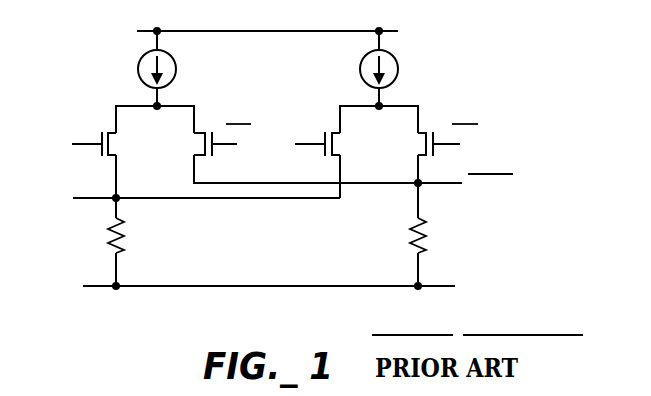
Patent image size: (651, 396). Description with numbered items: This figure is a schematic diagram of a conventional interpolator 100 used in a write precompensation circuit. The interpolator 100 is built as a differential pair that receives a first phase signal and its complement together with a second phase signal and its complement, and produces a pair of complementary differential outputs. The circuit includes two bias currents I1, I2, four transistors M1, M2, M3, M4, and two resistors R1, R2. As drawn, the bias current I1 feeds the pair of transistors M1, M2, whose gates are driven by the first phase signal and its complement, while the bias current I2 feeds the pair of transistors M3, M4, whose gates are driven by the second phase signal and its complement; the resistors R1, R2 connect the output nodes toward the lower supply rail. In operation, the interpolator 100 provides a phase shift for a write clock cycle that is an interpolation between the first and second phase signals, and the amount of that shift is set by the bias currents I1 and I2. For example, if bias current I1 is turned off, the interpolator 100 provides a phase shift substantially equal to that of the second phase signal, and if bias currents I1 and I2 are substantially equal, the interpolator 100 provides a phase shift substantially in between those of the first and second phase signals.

The interpolator 100 is at (473, 57).
The bias current I1 is at (168, 69).
The bias current I2 is at (368, 69).
The transistor M1 is at (106, 144).
The transistor M2 is at (203, 144).
The transistor M3 is at (329, 144).
The transistor M4 is at (426, 144).
The resistor R1 is at (132, 235).
The resistor R2 is at (404, 235).